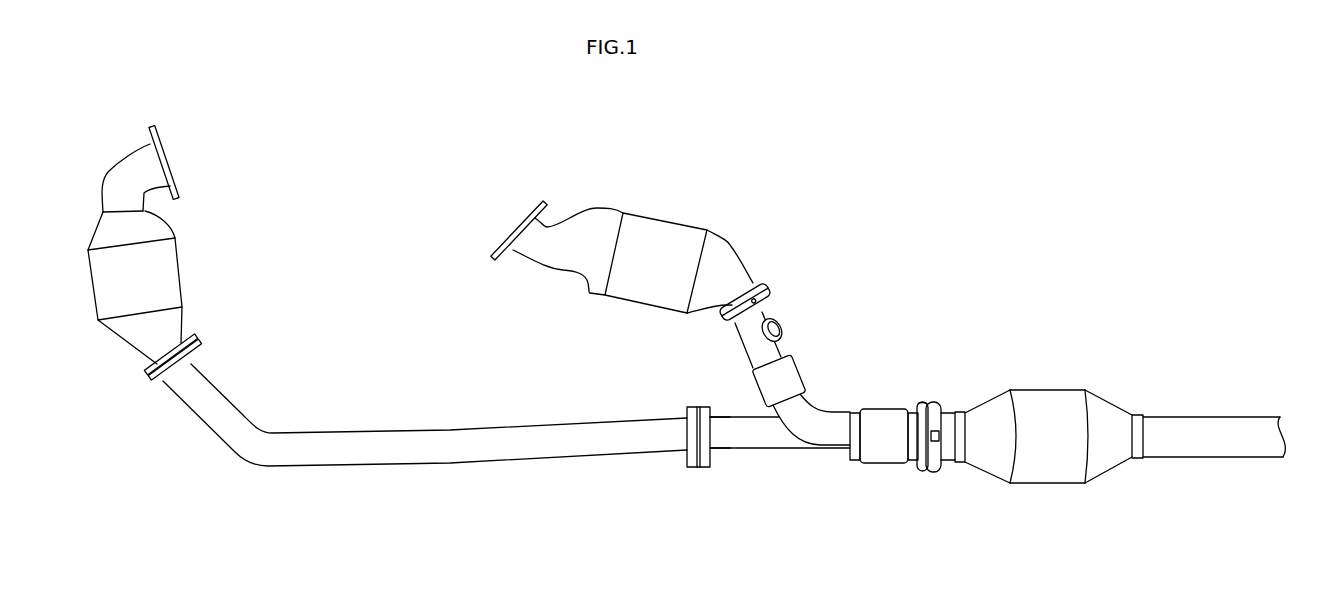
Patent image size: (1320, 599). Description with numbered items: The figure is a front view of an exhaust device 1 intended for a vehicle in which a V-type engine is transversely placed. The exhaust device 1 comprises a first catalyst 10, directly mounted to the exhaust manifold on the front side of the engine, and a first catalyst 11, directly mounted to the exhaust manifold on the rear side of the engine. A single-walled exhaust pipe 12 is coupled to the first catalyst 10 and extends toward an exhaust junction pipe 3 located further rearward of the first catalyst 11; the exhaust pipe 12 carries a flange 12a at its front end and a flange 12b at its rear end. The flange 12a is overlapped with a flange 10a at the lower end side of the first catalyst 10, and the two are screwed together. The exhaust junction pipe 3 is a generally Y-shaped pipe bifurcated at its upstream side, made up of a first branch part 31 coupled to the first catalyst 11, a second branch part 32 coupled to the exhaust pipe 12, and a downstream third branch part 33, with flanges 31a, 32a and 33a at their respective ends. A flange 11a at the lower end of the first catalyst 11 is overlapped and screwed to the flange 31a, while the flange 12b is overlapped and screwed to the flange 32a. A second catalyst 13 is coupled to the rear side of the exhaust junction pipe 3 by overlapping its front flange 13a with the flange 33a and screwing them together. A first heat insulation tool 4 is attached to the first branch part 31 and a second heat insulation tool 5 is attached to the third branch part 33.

The exhaust device 1 is at (958, 132).
The first catalyst 10 is at (180, 262).
The flange 10a is at (188, 338).
The first catalyst 11 is at (662, 213).
The flange 11a is at (758, 282).
The exhaust pipe 12 is at (370, 467).
The flange 12a is at (215, 363).
The flange 12b is at (687, 412).
The second catalyst 13 is at (1043, 388).
The flange 13a is at (942, 470).
The exhaust junction pipe 3 is at (848, 462).
The first branch part 31 is at (820, 408).
The flange 31a is at (772, 303).
The second branch part 32 is at (772, 452).
The flange 32a is at (713, 463).
The third branch part 33 is at (917, 427).
The flange 33a is at (917, 401).
The first heat insulation tool 4 is at (797, 362).
The second heat insulation tool 5 is at (872, 462).